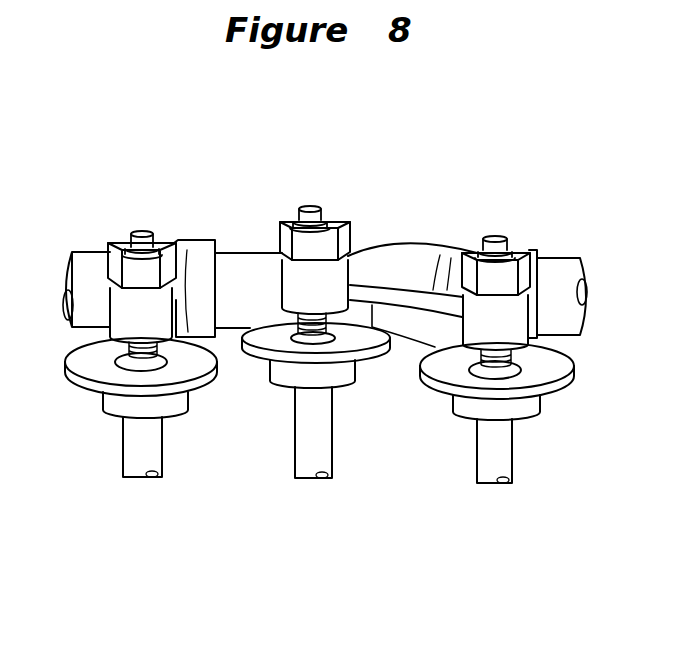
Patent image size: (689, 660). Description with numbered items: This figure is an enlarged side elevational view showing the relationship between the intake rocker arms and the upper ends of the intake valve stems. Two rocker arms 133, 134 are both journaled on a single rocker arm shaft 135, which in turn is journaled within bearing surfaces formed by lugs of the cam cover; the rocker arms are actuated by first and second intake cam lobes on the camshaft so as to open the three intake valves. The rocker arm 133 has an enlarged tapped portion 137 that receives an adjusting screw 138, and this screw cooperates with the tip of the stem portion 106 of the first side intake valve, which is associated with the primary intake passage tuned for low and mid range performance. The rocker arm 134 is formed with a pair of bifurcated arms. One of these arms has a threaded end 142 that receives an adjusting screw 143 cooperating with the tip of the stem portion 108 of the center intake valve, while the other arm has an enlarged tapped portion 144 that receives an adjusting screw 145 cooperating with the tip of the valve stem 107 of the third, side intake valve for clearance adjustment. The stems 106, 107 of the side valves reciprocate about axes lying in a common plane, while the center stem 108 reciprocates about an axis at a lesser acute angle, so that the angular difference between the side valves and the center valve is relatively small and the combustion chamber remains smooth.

The stem portion 106 is at (124, 443).
The valve stem 107 is at (512, 457).
The stem portion 108 is at (333, 448).
The rocker arm 133 is at (177, 237).
The rocker arm 134 is at (401, 230).
The rocker arm shaft 135 is at (577, 315).
The enlarged tapped portion 137 is at (66, 289).
The adjusting screw 138 is at (144, 231).
The threaded end 142 is at (287, 277).
The adjusting screw 143 is at (315, 203).
The enlarged tapped portion 144 is at (513, 322).
The adjusting screw 145 is at (493, 235).